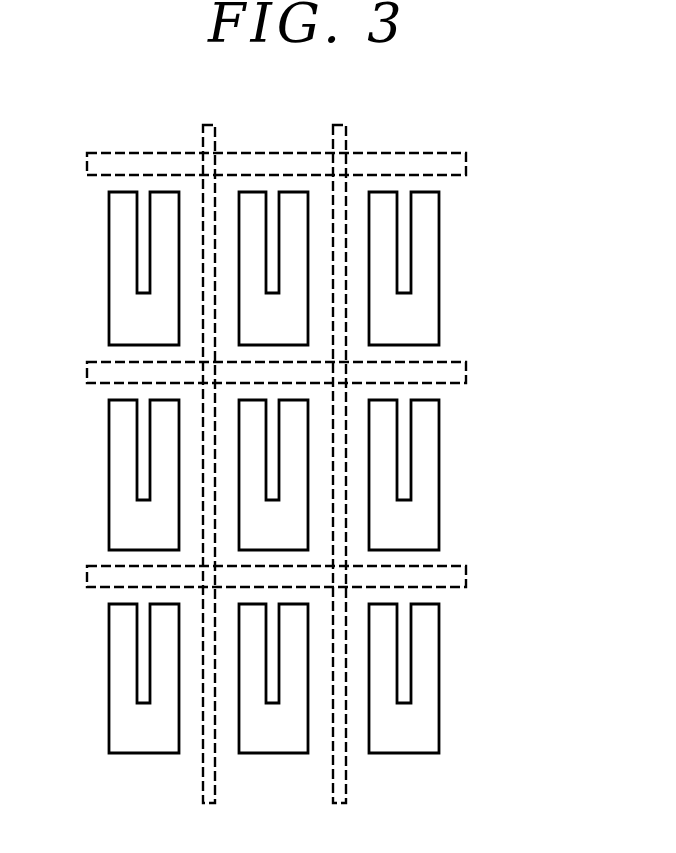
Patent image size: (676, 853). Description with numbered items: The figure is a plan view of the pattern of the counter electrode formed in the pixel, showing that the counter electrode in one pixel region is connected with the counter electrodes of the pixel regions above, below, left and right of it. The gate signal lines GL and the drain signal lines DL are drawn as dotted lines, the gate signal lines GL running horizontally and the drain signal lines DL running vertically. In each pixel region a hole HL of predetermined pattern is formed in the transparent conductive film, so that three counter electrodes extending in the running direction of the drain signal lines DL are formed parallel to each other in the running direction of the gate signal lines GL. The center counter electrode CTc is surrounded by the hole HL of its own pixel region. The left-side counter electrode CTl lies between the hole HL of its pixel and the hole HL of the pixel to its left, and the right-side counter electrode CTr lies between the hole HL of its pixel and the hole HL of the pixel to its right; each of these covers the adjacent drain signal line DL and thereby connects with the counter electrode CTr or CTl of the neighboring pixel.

The gate signal line GL is at (458, 158).
The drain signal line DL is at (207, 748).
The hole HL is at (110, 245).
The left-side counter electrode CTl is at (225, 223).
The center counter electrode CTc is at (267, 232).
The right-side counter electrode CTr is at (323, 212).